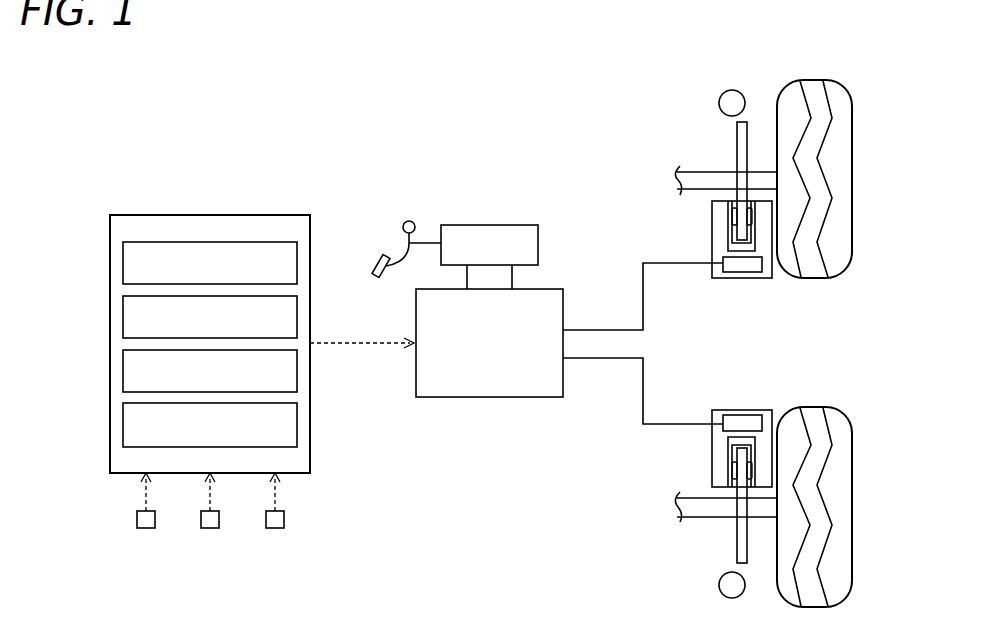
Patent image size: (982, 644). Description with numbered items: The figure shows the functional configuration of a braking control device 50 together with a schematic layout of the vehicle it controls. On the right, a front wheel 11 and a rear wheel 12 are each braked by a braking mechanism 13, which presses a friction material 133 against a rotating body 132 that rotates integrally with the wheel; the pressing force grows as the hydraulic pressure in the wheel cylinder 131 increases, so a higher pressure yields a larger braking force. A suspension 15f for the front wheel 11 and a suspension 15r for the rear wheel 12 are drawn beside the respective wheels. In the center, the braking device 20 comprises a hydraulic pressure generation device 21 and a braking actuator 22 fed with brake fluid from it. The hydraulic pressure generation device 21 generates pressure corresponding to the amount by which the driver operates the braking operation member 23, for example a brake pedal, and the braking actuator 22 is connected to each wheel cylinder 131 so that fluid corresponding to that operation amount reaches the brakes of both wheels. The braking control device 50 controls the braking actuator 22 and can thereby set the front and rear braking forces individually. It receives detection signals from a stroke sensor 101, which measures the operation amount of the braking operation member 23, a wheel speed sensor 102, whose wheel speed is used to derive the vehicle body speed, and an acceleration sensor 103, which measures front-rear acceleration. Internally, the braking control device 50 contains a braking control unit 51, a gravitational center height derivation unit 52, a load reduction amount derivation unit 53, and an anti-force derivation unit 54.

The front wheel 11 is at (853, 180).
The rear wheel 12 is at (853, 505).
The braking mechanism 13 is at (775, 291).
The wheel cylinder 131 is at (740, 278).
The rotating body 132 is at (737, 145).
The friction material 133 is at (744, 222).
The suspension for the front wheel 15f is at (719, 103).
The suspension for the rear wheel 15r is at (719, 585).
The braking device 20 is at (397, 442).
The hydraulic pressure generation device 21 is at (490, 225).
The braking actuator 22 is at (490, 397).
The braking operation member 23 is at (374, 263).
The braking control device 50 is at (168, 214).
The braking control unit 51 is at (123, 262).
The gravitational center height derivation unit 52 is at (123, 316).
The load reduction amount derivation unit 53 is at (123, 370).
The anti-force derivation unit 54 is at (123, 422).
The stroke sensor 101 is at (146, 528).
The wheel speed sensor 102 is at (210, 528).
The acceleration sensor 103 is at (275, 528).